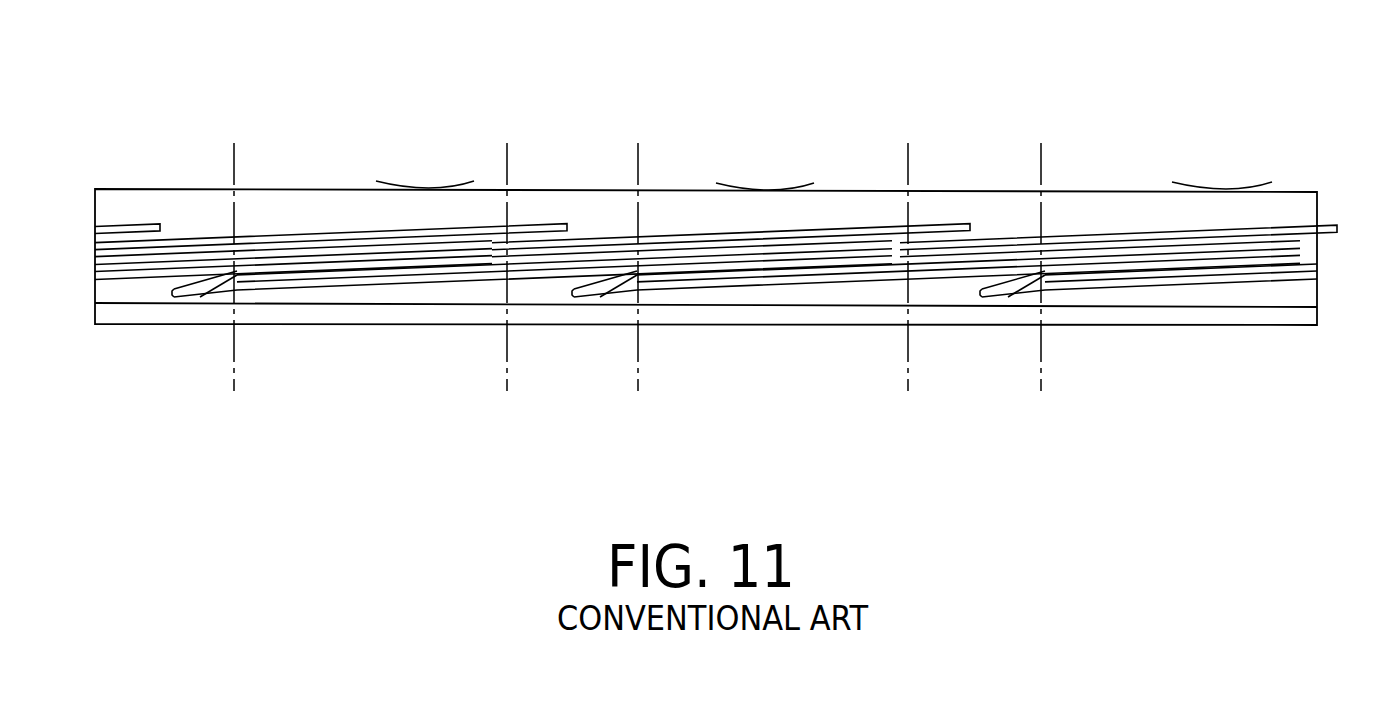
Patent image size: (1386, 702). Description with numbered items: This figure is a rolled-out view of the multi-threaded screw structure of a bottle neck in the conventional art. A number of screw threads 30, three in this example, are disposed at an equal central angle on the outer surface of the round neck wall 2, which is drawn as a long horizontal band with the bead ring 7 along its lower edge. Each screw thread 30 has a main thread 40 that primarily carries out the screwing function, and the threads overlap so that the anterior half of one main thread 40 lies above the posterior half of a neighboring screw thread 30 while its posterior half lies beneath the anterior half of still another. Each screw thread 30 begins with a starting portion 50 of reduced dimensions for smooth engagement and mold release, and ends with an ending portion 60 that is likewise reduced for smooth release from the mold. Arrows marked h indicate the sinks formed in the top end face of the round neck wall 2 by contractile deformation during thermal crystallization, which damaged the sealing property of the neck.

The round neck wall 2 is at (682, 197).
The bead ring 7 is at (766, 312).
The screw thread 30 is at (254, 222).
The main thread 40 is at (180, 262).
The starting portion 50 is at (116, 224).
The ending portion 60 is at (200, 297).
The sinks h is at (432, 172).